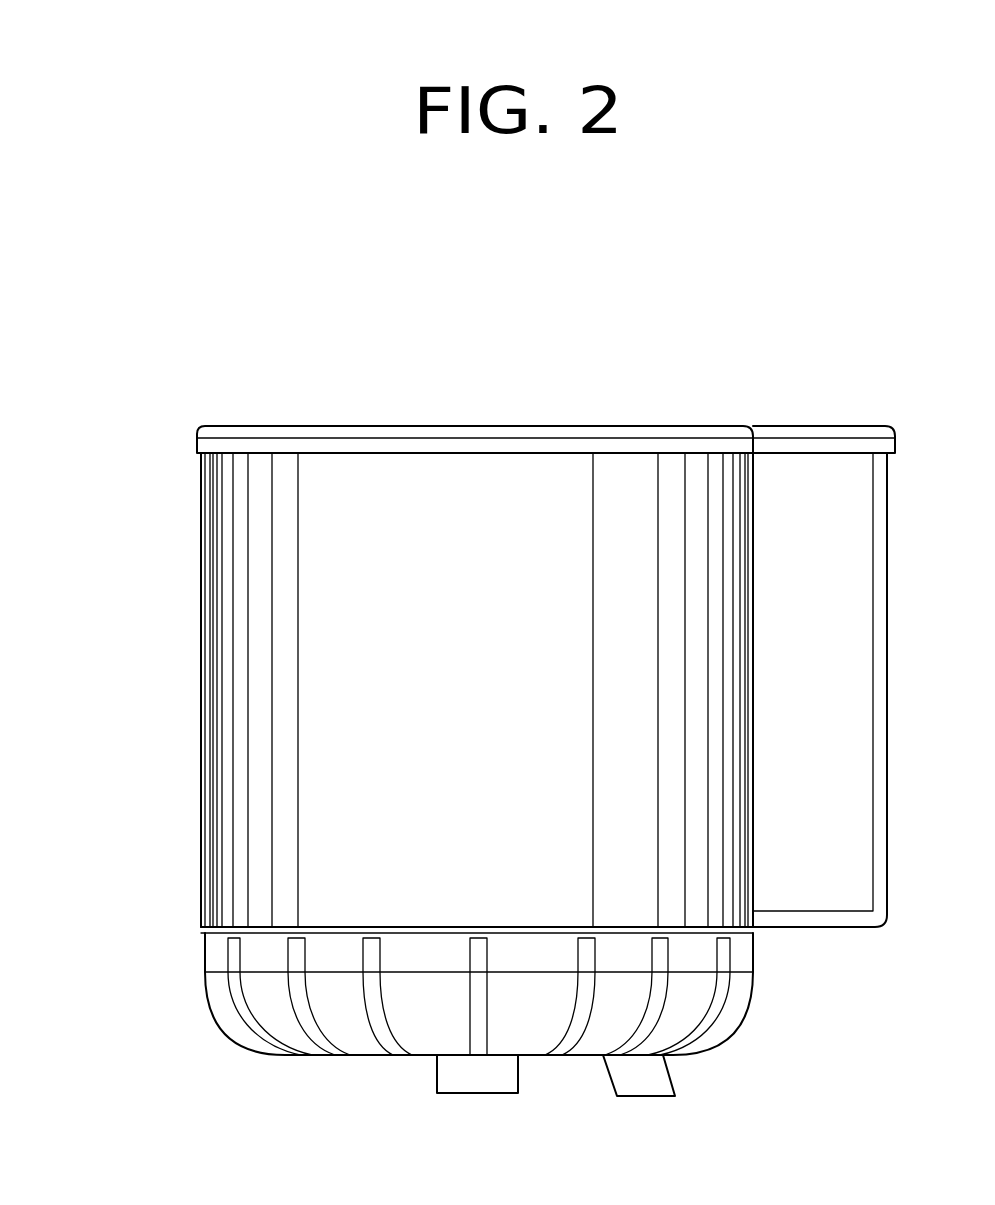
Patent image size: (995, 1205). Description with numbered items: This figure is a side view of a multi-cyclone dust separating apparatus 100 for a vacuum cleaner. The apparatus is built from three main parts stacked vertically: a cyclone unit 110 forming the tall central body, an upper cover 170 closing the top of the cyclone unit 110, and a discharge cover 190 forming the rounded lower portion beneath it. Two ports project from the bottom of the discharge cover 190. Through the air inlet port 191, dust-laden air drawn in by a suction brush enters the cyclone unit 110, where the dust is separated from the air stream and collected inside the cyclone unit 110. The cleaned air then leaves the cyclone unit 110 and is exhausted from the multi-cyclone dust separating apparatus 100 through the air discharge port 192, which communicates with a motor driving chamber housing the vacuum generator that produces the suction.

The multi-cyclone dust separating apparatus 100 is at (782, 312).
The cyclone unit 110 is at (178, 562).
The upper cover 170 is at (216, 412).
The discharge cover 190 is at (178, 958).
The air inlet port 191 is at (636, 1090).
The air discharge port 192 is at (478, 1085).